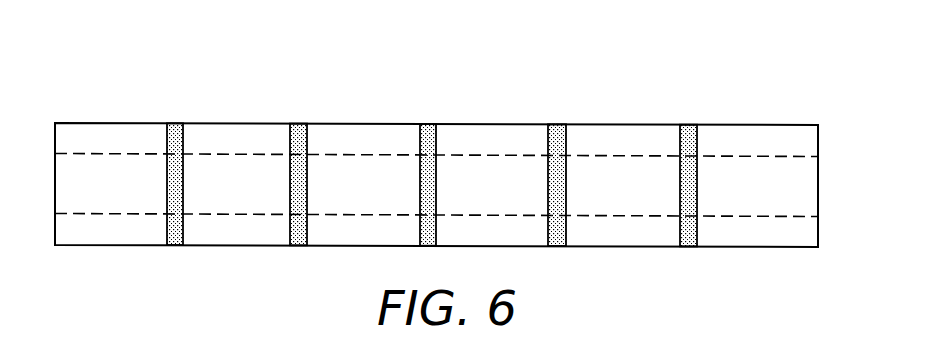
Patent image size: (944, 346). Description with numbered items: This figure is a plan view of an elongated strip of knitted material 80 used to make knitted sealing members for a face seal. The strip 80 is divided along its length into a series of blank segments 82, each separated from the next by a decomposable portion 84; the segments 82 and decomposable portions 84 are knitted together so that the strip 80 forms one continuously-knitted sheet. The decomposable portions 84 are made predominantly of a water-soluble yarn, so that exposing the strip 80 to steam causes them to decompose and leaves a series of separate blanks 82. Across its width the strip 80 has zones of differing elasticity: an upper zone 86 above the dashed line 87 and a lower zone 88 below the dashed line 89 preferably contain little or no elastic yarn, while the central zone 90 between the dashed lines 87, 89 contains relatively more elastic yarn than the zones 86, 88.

The knitted fabric strip 80 is at (566, 86).
The blank segments 82 is at (127, 195).
The decomposable portions 84 is at (297, 130).
The upper zone 86 is at (752, 136).
The upper dashed line 87 is at (820, 156).
The lower zone 88 is at (752, 237).
The lower dashed line 89 is at (820, 216).
The central elastic zone 90 is at (800, 184).